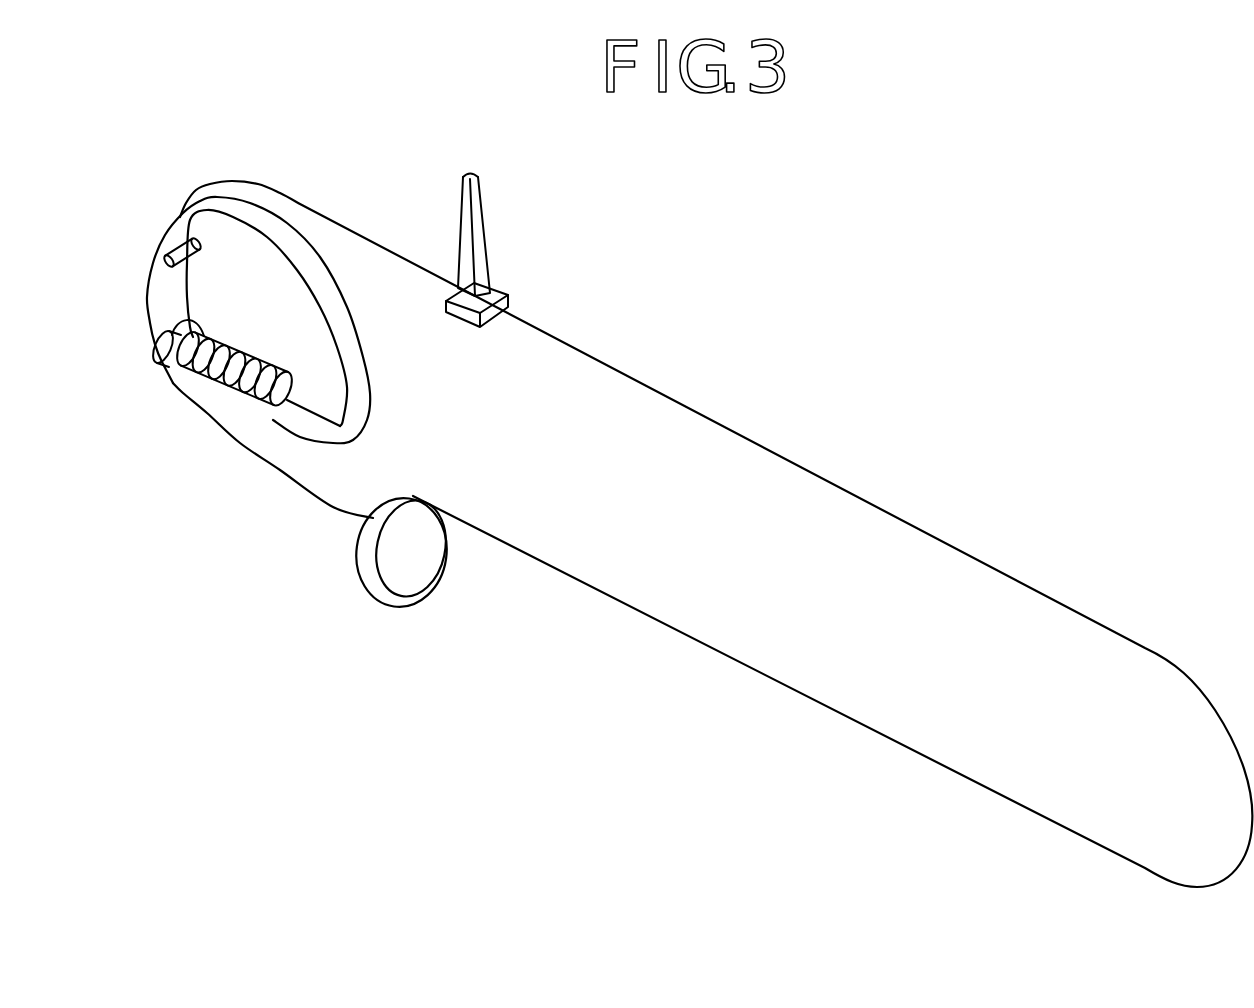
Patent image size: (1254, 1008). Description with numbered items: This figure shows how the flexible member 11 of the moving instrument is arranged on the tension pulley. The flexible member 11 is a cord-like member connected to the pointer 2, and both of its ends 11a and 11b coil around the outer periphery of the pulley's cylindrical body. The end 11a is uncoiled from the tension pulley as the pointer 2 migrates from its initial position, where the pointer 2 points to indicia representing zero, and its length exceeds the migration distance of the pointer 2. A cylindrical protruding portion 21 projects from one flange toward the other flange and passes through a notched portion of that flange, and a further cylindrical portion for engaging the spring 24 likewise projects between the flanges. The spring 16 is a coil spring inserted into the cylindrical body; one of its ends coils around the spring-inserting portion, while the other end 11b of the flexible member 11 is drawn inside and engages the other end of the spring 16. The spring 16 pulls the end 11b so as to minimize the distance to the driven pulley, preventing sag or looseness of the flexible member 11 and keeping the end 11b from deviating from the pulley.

The flexible member 11 is at (737, 432).
The end of the flexible member 11a is at (202, 250).
The other end of the flexible member 11b is at (294, 403).
The spring 16 is at (225, 387).
The portion for engaging the spring 24 is at (156, 349).
The protruding portion 21 is at (163, 236).
The pointer 2 is at (483, 207).